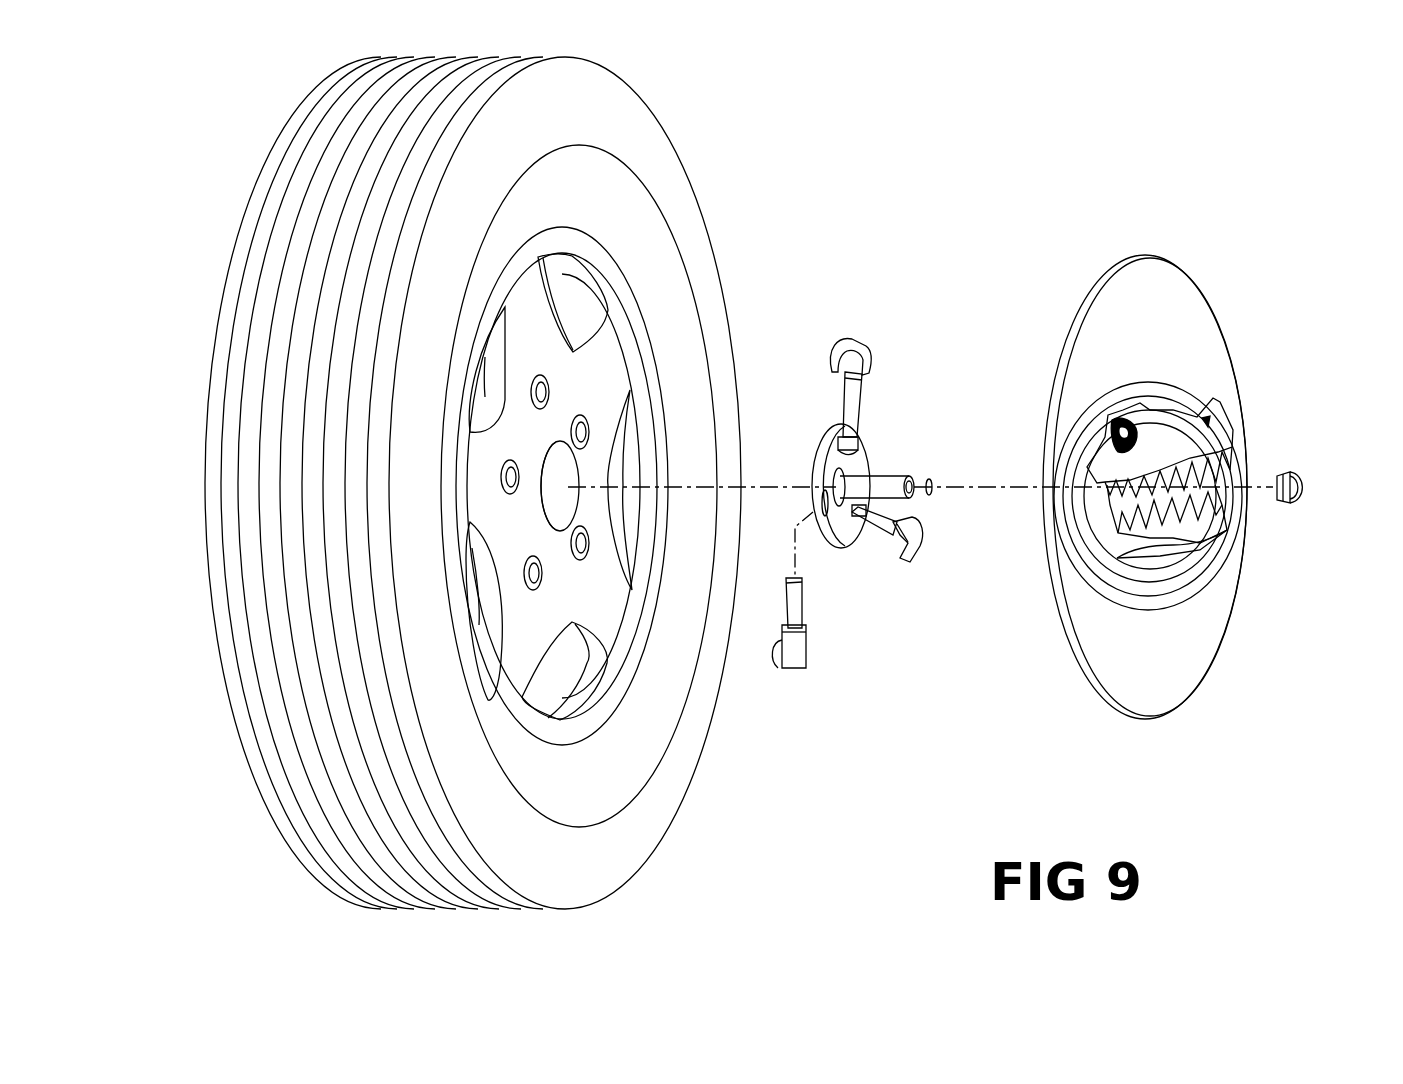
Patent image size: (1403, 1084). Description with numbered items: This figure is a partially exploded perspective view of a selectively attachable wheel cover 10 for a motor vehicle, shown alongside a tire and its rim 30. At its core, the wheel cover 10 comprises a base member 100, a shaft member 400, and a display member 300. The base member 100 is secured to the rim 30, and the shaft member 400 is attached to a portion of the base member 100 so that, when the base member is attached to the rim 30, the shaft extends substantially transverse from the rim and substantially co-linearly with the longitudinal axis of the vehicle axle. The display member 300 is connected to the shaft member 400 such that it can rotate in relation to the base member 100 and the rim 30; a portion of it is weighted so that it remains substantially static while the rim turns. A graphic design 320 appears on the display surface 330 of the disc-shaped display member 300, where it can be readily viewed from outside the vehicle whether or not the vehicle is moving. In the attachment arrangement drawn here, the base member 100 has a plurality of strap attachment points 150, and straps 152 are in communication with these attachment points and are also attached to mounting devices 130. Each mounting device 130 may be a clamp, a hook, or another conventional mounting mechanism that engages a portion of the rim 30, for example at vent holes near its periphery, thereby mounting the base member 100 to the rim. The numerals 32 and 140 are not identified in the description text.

The selectively attachable wheel cover 10 is at (1025, 229).
The rim 30 is at (632, 308).
The tire 32 is at (618, 262).
The base member 100 is at (957, 384).
The mounting device 130 is at (858, 340).
The mounting plate 140 is at (850, 462).
The strap attachment point 150 is at (853, 443).
The strap 152 is at (857, 388).
The display member 300 is at (1215, 292).
The graphic design 320 is at (1222, 426).
The display surface 330 is at (1223, 608).
The shaft member 400 is at (887, 480).